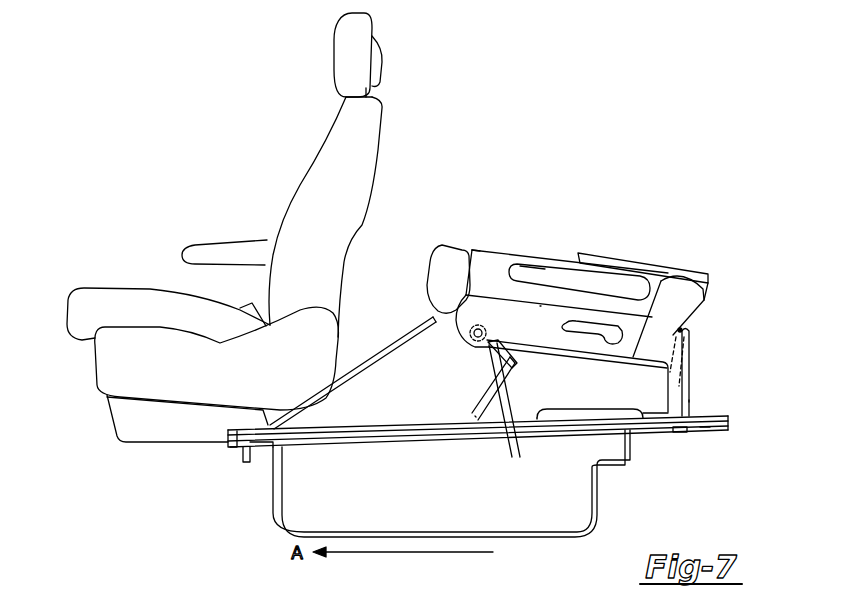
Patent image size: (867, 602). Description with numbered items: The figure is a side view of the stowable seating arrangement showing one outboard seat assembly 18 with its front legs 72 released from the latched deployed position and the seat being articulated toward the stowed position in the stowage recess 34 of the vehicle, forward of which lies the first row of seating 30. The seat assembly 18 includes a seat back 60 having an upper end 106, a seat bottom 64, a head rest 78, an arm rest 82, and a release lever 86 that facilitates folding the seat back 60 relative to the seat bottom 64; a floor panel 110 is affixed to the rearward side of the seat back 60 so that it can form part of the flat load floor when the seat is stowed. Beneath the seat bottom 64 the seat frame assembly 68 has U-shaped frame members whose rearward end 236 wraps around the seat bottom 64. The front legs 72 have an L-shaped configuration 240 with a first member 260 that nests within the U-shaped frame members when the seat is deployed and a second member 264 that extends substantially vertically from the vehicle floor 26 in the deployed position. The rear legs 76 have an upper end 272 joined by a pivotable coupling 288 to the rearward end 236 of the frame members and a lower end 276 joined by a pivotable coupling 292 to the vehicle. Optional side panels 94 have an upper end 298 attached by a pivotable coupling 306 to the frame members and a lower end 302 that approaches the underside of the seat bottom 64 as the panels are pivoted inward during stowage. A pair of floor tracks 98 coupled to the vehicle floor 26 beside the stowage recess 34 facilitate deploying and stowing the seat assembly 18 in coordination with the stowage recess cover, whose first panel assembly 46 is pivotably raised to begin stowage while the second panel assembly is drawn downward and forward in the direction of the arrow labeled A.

The outboard seat assembly 18 is at (680, 231).
The vehicle floor 26 is at (228, 433).
The first row of seating 30 is at (137, 448).
The stowage recess 34 is at (273, 495).
The first panel assembly 46 is at (381, 337).
The seat back 60 is at (508, 252).
The seat bottom 64 is at (450, 317).
The seat frame assembly 68 is at (552, 262).
The front legs 72 is at (477, 388).
The rear legs 76 is at (690, 400).
The head rest 78 is at (437, 262).
The arm rests 82 is at (558, 272).
The release lever 86 is at (592, 340).
The side panels 94 is at (642, 400).
The floor tracks 98 is at (412, 445).
The upper end 106 is at (472, 250).
The floor panel 110 is at (635, 263).
The rearward end 236 is at (678, 380).
The L-shaped configuration 240 is at (497, 404).
The first member 260 is at (485, 358).
The second member 264 is at (468, 410).
The upper end 272 is at (688, 340).
The lower end 276 is at (685, 432).
The pivotable coupling 288 is at (688, 330).
The pivotable coupling 292 is at (707, 430).
The upper end 298 is at (558, 362).
The lower end 302 is at (590, 413).
The pivotable coupling 306 is at (553, 352).